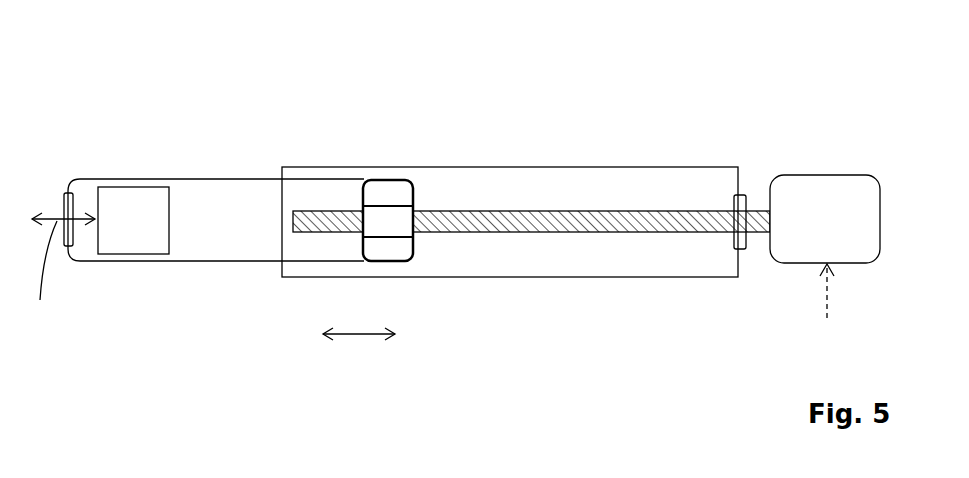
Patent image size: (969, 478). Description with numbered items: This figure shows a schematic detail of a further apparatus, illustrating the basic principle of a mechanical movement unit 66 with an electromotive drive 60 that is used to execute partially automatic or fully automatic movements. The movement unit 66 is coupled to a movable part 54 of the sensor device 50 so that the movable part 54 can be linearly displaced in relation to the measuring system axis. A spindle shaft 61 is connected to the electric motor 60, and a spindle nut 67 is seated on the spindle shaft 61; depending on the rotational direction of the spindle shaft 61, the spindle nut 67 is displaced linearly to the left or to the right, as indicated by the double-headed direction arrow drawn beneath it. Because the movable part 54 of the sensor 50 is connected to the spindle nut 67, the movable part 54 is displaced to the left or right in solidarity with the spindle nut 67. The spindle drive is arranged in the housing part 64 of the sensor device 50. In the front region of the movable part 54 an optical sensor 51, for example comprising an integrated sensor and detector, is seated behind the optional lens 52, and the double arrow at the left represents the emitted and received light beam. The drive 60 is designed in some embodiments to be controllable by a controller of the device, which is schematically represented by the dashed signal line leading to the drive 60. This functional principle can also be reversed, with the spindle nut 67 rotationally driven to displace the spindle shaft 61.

The sensor device 50 is at (515, 56).
The optical sensor 51 is at (137, 198).
The lens 52 is at (68, 190).
The movable part 54 is at (227, 180).
The electromotive drive 60 is at (808, 175).
The spindle shaft 61 is at (660, 211).
The housing part 64 is at (573, 277).
The mechanical movement unit 66 is at (618, 104).
The spindle nut 67 is at (390, 196).